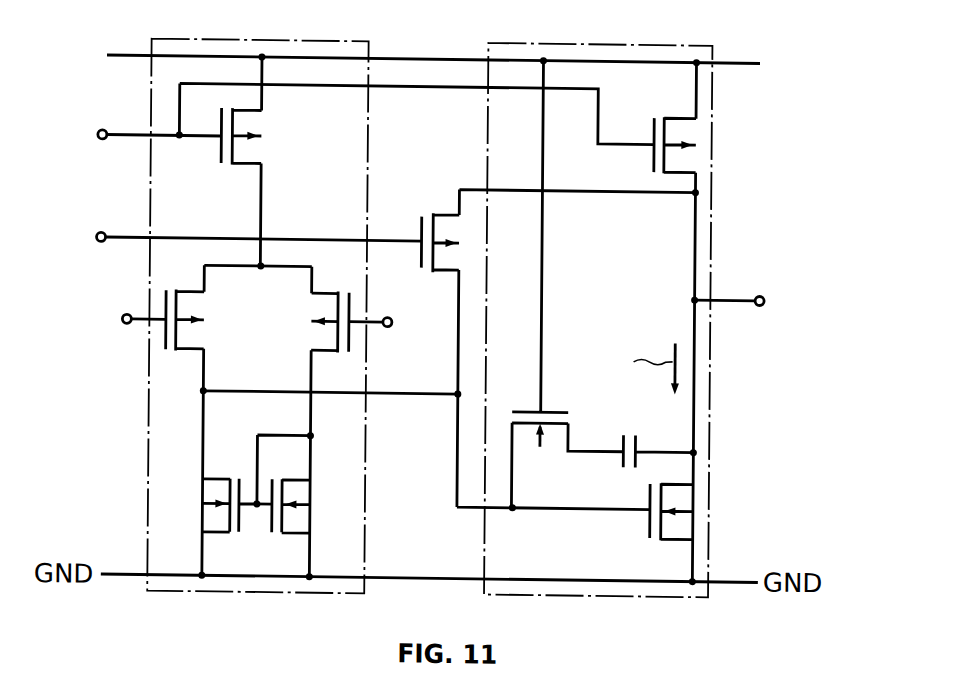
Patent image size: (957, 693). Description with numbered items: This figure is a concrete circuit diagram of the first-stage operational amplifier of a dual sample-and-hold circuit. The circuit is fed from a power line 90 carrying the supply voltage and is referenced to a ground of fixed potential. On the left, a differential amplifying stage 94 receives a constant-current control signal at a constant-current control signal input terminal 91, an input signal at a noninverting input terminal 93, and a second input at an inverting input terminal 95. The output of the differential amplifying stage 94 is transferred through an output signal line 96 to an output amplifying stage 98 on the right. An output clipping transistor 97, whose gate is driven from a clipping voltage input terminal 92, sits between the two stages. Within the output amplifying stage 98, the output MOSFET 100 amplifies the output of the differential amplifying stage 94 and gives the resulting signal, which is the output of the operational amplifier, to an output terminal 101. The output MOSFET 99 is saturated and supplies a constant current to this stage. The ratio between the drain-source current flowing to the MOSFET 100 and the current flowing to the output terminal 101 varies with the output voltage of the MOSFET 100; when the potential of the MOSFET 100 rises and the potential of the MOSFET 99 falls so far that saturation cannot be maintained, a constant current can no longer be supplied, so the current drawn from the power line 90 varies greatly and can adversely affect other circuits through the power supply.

The power line 90 is at (128, 52).
The constant-current control signal input terminal 91 is at (102, 140).
The clipping voltage input terminal 92 is at (97, 242).
The noninverting input terminal 93 is at (127, 330).
The differential amplifying stage 94 is at (150, 478).
The inverting input terminal 95 is at (393, 324).
The output signal line 96 is at (412, 394).
The output clipping transistor 97 is at (430, 208).
The output amplifying stage 98 is at (488, 112).
The output MOSFET 99 is at (698, 124).
The output MOSFET 100 is at (694, 486).
The output terminal 101 is at (762, 288).